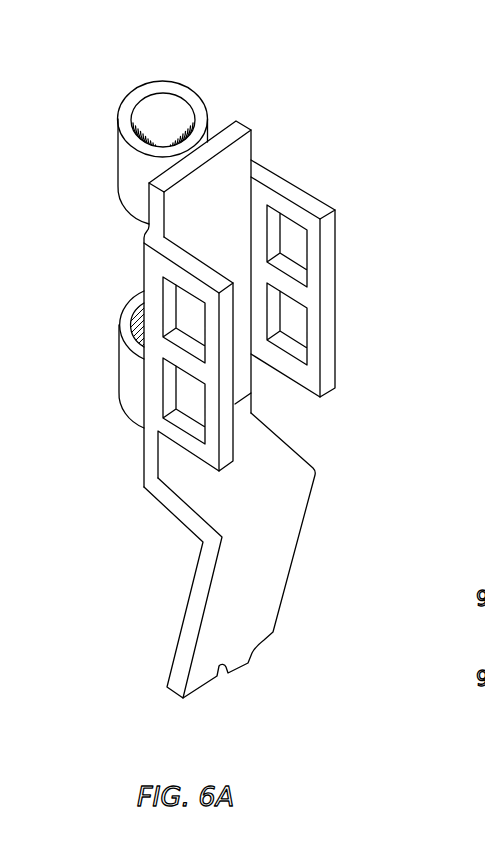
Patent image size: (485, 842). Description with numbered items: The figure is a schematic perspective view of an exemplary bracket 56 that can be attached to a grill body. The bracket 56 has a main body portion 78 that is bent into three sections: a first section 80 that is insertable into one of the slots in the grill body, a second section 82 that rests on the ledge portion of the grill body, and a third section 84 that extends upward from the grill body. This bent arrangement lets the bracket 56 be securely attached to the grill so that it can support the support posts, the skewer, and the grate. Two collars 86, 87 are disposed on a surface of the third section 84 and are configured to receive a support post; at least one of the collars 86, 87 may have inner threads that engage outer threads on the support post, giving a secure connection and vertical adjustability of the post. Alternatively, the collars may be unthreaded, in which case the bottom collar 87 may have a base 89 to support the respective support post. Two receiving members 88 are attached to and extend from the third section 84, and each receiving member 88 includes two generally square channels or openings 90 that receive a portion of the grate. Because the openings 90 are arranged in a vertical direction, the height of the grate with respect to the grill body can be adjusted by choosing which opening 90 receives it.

The bracket 56 is at (263, 72).
The main body portion 78 is at (340, 452).
The first section 80 is at (263, 597).
The second section 82 is at (198, 500).
The third section 84 is at (238, 160).
The collar 86 is at (118, 168).
The collar 87 is at (118, 355).
The base 89 is at (125, 407).
The receiving member 88 is at (337, 247).
The channel or opening 90 is at (295, 242).